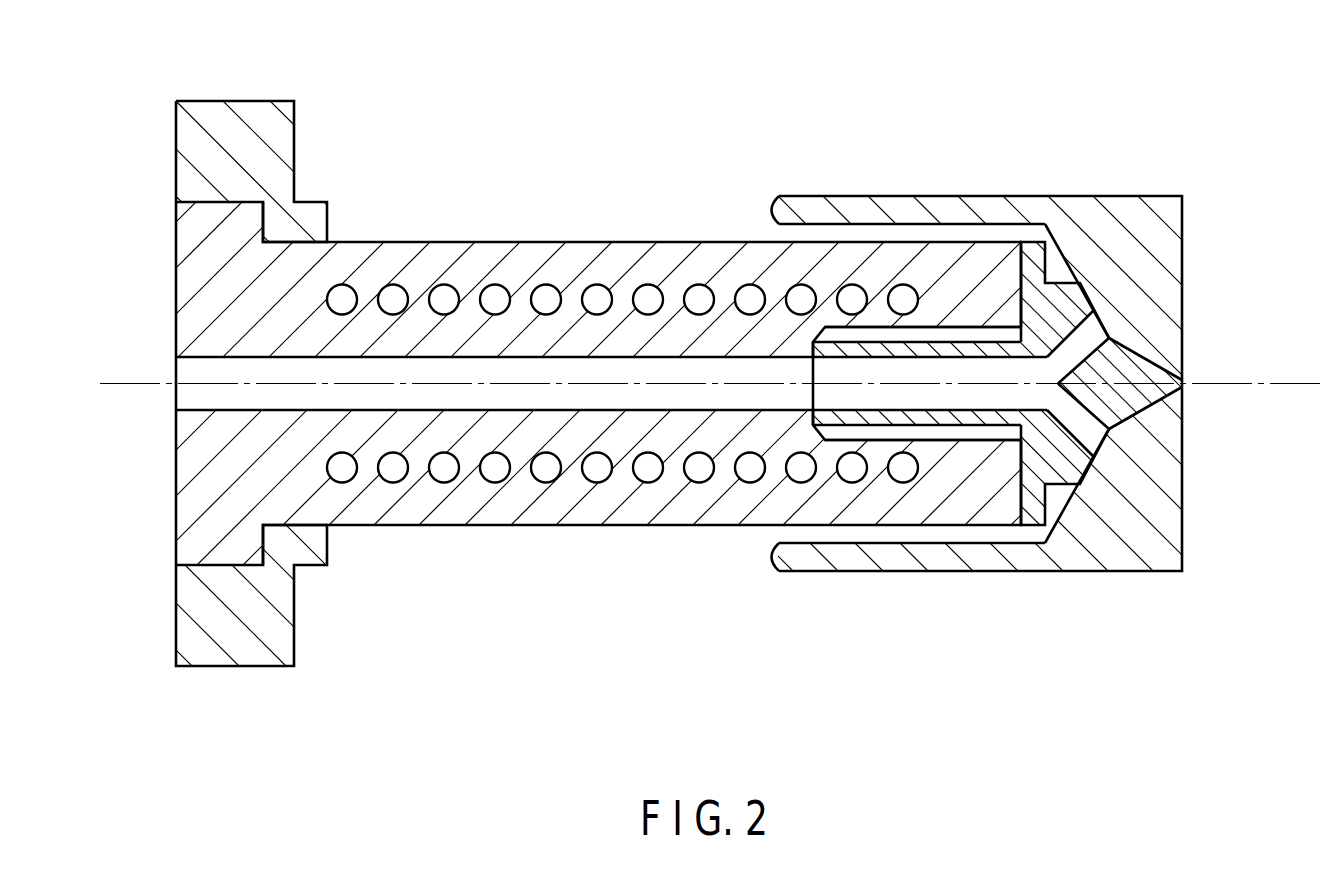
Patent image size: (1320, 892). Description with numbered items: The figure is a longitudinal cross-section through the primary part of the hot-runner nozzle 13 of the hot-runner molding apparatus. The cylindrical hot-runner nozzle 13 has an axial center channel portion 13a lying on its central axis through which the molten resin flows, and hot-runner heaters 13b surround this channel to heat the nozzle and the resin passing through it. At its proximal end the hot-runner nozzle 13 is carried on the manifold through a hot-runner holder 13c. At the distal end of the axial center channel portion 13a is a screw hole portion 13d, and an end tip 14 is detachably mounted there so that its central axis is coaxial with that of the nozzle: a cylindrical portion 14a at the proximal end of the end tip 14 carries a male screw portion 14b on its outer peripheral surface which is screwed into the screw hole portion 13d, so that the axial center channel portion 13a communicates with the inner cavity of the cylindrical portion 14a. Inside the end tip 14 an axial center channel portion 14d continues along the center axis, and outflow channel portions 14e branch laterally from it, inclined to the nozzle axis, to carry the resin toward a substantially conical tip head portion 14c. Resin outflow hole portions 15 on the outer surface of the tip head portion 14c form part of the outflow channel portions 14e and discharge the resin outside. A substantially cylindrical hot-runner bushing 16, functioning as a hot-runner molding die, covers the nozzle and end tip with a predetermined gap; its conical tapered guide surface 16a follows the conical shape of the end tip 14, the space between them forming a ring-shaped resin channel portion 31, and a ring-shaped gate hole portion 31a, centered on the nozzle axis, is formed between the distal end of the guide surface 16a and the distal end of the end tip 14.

The hot-runner nozzle 13 is at (734, 540).
The axial center channel portion 13a is at (188, 395).
The hot-runner heaters 13b is at (652, 470).
The hot-runner holder 13c is at (247, 114).
The screw hole portion 13d is at (962, 327).
The end tip 14 is at (1128, 365).
The cylindrical portion 14a is at (985, 432).
The male screw portion 14b is at (933, 432).
The tip head portion 14c is at (1165, 427).
The axial center channel portion 14d is at (875, 397).
The outflow channel portions 14e is at (1078, 425).
The resin outflow hole portions 15 is at (1113, 307).
The hot-runner bushing 16 is at (1108, 556).
The guide surface 16a is at (1073, 522).
The ring-shaped resin channel portion 31 is at (1073, 272).
The gate hole portion 31a is at (1185, 377).